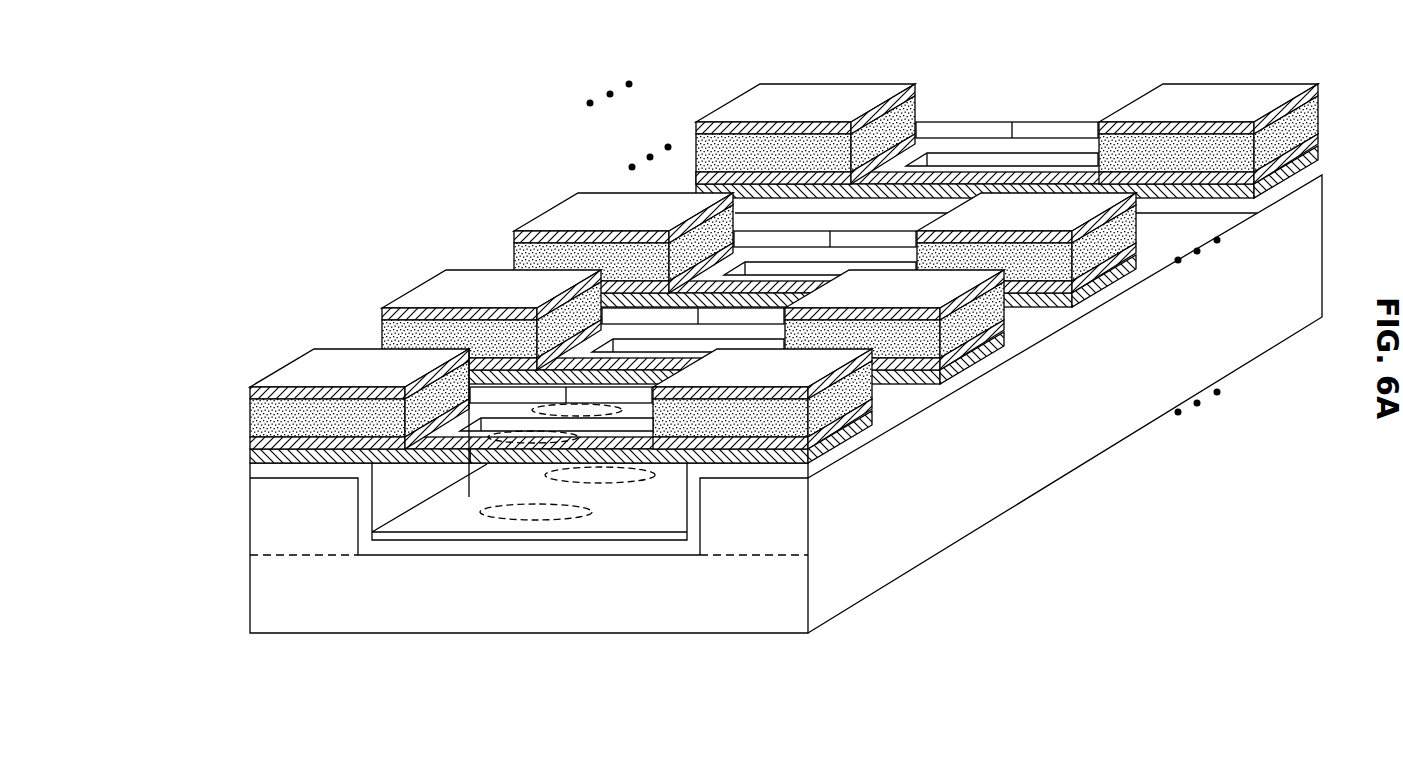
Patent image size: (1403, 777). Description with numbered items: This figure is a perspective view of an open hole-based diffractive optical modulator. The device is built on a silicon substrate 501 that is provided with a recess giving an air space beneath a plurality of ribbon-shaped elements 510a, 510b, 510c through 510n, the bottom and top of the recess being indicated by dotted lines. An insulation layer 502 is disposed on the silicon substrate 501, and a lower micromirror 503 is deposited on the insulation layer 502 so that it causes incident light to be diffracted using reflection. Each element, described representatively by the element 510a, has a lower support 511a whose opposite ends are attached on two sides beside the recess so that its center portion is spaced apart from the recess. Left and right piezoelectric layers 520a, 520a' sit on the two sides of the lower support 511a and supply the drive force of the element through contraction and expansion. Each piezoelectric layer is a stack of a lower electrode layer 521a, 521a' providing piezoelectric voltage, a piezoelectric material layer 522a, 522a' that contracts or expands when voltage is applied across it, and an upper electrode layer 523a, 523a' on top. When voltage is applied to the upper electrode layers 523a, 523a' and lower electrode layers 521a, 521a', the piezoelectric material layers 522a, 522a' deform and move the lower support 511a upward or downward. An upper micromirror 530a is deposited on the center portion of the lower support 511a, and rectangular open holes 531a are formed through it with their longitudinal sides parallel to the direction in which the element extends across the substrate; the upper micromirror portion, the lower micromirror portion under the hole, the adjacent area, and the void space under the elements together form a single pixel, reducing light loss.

The silicon substrate 501 is at (750, 625).
The insulation layer 502 is at (680, 547).
The lower micromirror 503 is at (365, 543).
The element 510a is at (264, 402).
The element 510b is at (412, 290).
The element 510c is at (545, 212).
The element 510n is at (730, 104).
The lower support 511a is at (207, 445).
The piezoelectric layer 520a is at (307, 348).
The lower electrode layer 521a is at (318, 380).
The piezoelectric material layer 522a is at (328, 361).
The upper electrode layer 523a is at (344, 330).
The piezoelectric layer 520a' is at (877, 491).
The lower electrode layer 521a' is at (831, 509).
The piezoelectric material layer 522a' is at (852, 476).
The upper electrode layer 523a' is at (871, 455).
The upper micromirror 530a is at (469, 497).
The open hole 531a is at (497, 423).